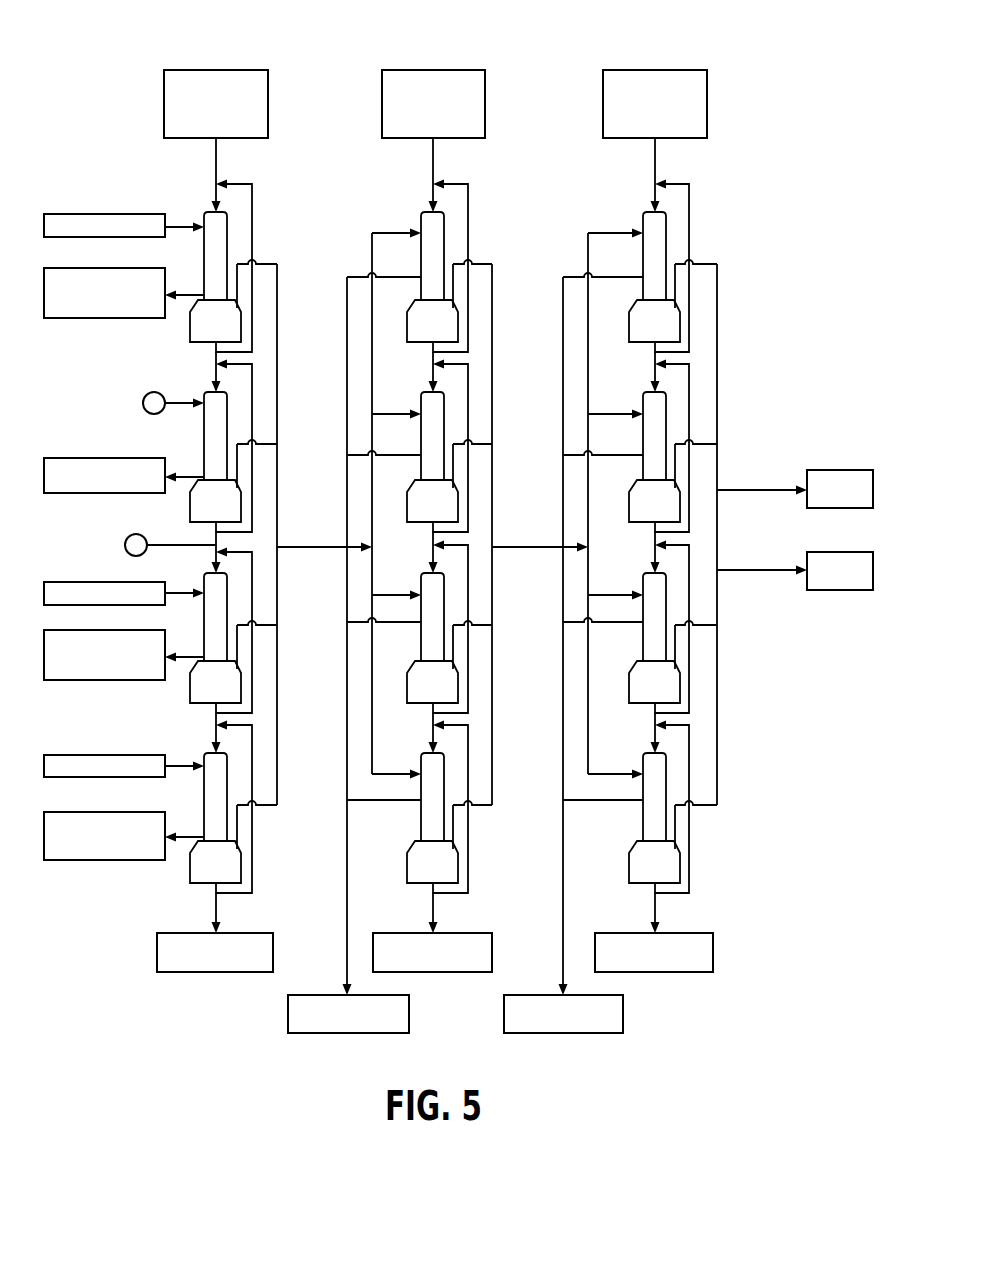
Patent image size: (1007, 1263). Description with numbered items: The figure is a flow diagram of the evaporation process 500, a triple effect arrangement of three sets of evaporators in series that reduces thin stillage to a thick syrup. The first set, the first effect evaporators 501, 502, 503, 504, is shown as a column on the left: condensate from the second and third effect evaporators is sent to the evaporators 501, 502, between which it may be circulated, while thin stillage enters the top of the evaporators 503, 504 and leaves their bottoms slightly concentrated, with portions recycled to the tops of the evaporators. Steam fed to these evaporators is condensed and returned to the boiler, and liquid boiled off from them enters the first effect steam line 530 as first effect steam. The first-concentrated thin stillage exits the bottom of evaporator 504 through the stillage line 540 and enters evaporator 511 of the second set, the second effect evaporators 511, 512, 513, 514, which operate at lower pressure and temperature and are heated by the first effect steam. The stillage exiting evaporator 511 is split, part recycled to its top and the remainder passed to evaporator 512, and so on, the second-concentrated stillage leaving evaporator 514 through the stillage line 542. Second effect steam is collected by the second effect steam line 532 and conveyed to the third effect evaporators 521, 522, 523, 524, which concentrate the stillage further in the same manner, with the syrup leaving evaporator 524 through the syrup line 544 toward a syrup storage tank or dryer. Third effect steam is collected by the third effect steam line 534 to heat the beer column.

The evaporation process 500 is at (732, 39).
The first effect evaporator 501 is at (190, 332).
The first effect evaporator 502 is at (190, 511).
The first effect evaporator 503 is at (190, 690).
The first effect evaporator 504 is at (190, 870).
The second effect evaporator 511 is at (421, 222).
The second effect evaporator 512 is at (421, 402).
The second effect evaporator 513 is at (421, 582).
The second effect evaporator 514 is at (407, 845).
The third effect evaporator 521 is at (643, 222).
The third effect evaporator 522 is at (643, 402).
The third effect evaporator 523 is at (643, 582).
The third effect evaporator 524 is at (629, 845).
The first effect steam line 530 is at (278, 302).
The second effect steam line 532 is at (492, 288).
The third effect steam line 534 is at (717, 302).
The stillage line 540 is at (216, 908).
The stillage line 542 is at (433, 908).
The syrup line 544 is at (655, 908).